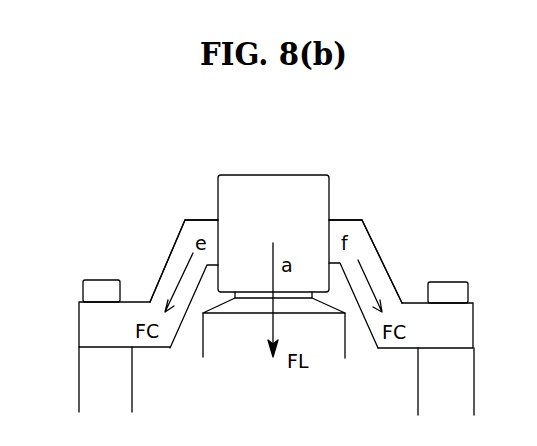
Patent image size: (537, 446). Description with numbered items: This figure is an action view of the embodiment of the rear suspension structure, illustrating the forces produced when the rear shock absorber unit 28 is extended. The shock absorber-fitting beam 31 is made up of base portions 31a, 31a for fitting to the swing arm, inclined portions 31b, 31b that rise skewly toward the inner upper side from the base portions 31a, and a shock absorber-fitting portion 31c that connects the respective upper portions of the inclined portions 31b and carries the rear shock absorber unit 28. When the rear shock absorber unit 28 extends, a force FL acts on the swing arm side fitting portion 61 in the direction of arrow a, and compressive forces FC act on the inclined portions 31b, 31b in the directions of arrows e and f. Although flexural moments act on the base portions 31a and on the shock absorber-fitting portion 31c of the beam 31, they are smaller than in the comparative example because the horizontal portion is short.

The swing arm side fitting portion 61 is at (250, 175).
The rear shock absorber unit 28 is at (202, 348).
The shock absorber-fitting beam 31 is at (173, 226).
The base portions 31a is at (133, 300).
The inclined portions 31b is at (165, 263).
The shock absorber-fitting portion 31c is at (342, 218).